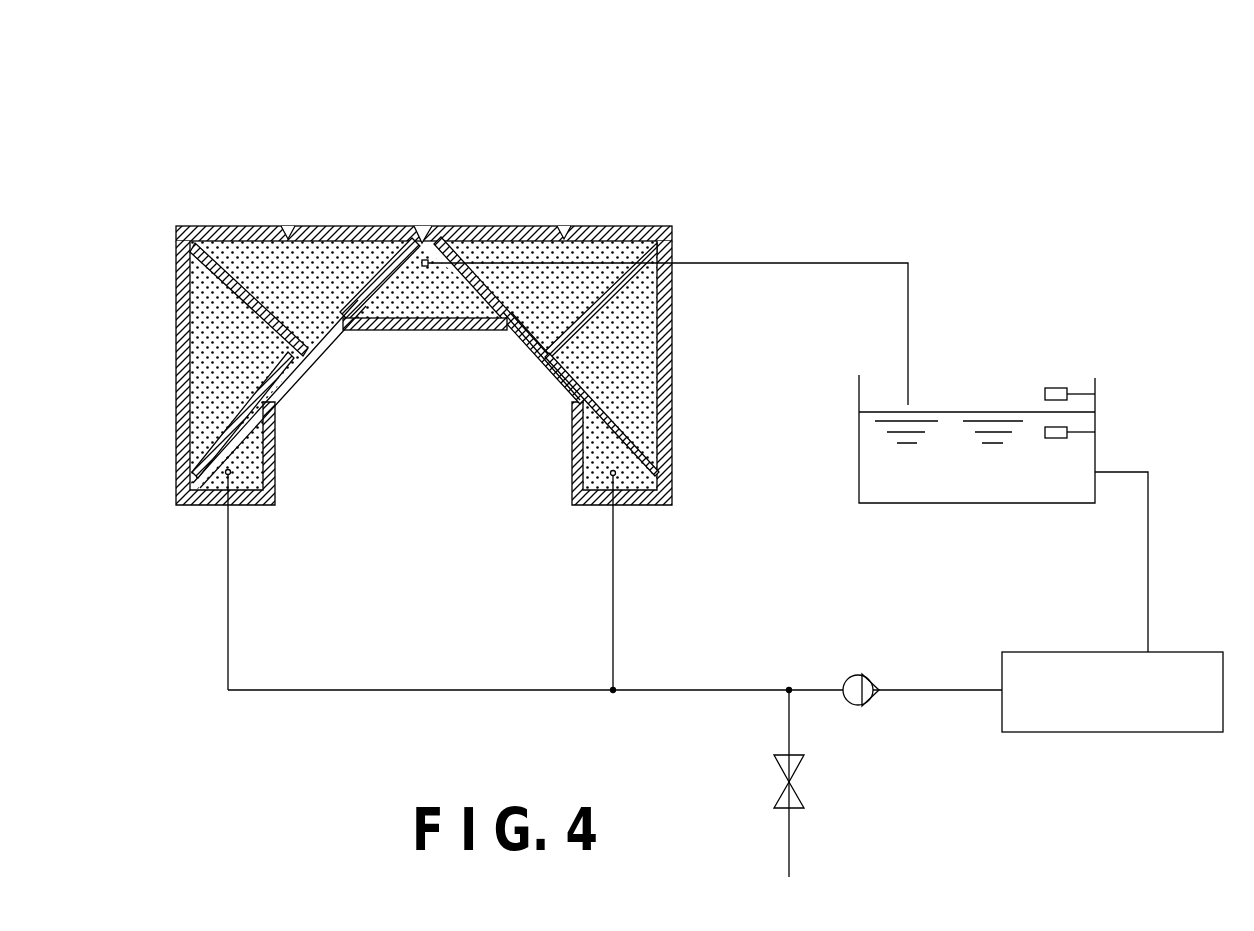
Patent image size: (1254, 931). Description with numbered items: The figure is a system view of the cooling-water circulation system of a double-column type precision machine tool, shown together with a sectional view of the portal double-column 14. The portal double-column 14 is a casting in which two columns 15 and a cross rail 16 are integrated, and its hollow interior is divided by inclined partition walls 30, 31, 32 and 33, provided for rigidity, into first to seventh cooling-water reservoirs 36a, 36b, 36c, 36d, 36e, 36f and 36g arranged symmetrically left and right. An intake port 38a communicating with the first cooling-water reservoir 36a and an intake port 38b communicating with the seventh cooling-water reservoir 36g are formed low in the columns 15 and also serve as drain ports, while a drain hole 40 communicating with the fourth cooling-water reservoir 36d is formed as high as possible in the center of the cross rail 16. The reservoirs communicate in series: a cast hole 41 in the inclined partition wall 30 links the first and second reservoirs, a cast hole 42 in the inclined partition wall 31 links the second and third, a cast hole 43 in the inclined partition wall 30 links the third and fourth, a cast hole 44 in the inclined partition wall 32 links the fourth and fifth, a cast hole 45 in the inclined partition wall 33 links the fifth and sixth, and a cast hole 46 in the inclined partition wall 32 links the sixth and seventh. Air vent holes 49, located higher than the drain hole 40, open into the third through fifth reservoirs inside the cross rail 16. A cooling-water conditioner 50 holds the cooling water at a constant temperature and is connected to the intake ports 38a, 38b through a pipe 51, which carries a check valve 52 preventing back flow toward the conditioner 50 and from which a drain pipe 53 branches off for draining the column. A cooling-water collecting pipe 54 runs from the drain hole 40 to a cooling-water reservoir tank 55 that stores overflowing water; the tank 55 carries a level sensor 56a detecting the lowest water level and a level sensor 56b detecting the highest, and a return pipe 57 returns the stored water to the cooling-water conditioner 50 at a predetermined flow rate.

The portal double-column 14 is at (558, 90).
The column 15 is at (178, 408).
The cross rail 16 is at (338, 232).
The inclined partition wall 30 is at (289, 380).
The inclined partition wall 31 is at (211, 269).
The inclined partition wall 32 is at (560, 377).
The inclined partition wall 33 is at (637, 272).
The first cooling-water reservoir 36a is at (262, 460).
The second cooling-water reservoir 36b is at (207, 374).
The third cooling-water reservoir 36c is at (308, 267).
The fourth cooling-water reservoir 36d is at (427, 303).
The fifth cooling-water reservoir 36e is at (541, 270).
The sixth cooling-water reservoir 36f is at (640, 372).
The seventh cooling-water reservoir 36g is at (590, 465).
The intake port 38a is at (192, 506).
The intake port 38b is at (643, 500).
The drain hole 40 is at (462, 293).
The cast hole 41 is at (225, 437).
The cast hole 42 is at (243, 293).
The cast hole 43 is at (375, 266).
The cast hole 44 is at (470, 262).
The cast hole 45 is at (601, 298).
The cast hole 46 is at (627, 437).
The air vent hole 49 is at (286, 232).
The cooling-water conditioner 50 is at (1188, 652).
The pipe 51 is at (622, 697).
The check valve 52 is at (845, 674).
The drain pipe 53 is at (787, 730).
The cooling-water collecting pipe 54 is at (786, 263).
The cooling-water reservoir tank 55 is at (1098, 400).
The level sensor 56a is at (1058, 438).
The level sensor 56b is at (1050, 388).
The return pipe 57 is at (1150, 548).